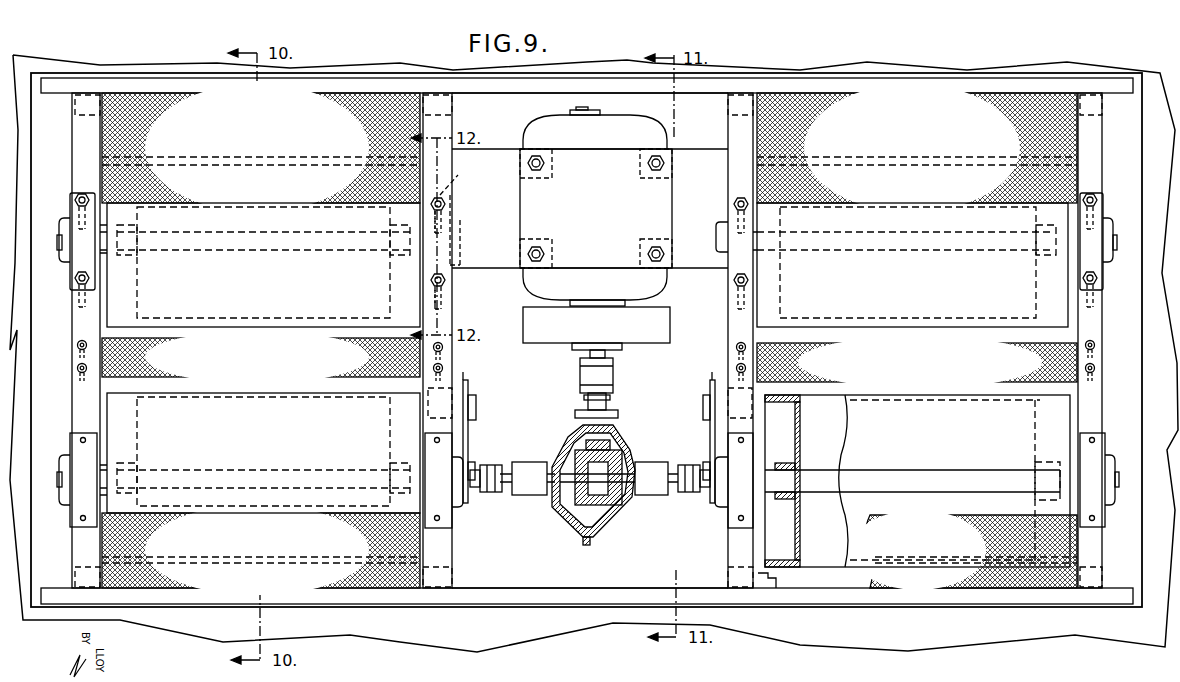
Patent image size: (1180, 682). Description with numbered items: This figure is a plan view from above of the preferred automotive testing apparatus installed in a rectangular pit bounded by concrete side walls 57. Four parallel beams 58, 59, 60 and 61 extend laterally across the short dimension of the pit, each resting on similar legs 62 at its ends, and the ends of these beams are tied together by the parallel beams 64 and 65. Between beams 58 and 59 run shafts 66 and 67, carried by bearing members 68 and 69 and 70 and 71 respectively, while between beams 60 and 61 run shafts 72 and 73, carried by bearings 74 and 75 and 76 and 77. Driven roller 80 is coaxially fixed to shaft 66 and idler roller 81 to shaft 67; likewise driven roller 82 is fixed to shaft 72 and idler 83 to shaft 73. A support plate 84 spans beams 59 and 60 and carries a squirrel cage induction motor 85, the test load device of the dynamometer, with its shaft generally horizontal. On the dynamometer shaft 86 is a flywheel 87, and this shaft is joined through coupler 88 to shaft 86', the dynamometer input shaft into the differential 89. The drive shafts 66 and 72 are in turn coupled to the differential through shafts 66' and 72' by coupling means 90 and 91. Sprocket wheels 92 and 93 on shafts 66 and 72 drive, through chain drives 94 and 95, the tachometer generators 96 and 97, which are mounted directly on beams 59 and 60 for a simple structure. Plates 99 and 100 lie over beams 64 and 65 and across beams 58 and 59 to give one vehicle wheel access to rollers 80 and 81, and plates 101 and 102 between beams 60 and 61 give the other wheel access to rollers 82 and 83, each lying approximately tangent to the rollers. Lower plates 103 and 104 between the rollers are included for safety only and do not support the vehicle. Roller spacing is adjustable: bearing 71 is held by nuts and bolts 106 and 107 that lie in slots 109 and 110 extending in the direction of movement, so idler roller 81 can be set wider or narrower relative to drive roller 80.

The concrete side walls 57 is at (877, 80).
The beam 58 is at (78, 145).
The beam 59 is at (444, 124).
The beam 60 is at (733, 141).
The beam 61 is at (1098, 149).
The legs 62 is at (72, 113).
The beam 64 is at (537, 595).
The beam 65 is at (588, 86).
The shaft 66 is at (260, 453).
The shaft 66' is at (527, 459).
The shaft 67 is at (286, 252).
The bearing member 68 is at (68, 455).
The bearing member 69 is at (462, 506).
The bearing member 70 is at (68, 215).
The bearing member 71 is at (462, 224).
The shaft 72 is at (917, 481).
The shaft 72' is at (659, 459).
The shaft 73 is at (876, 254).
The bearing 74 is at (722, 504).
The bearing 75 is at (1112, 462).
The bearing 76 is at (718, 226).
The bearing 77 is at (1110, 232).
The driven roller 80 is at (118, 422).
The idler roller 81 is at (115, 275).
The driven roller 82 is at (860, 550).
The idler roller 83 is at (770, 312).
The support plate 84 is at (498, 156).
The squirrel cage induction motor 85 is at (536, 284).
The dynamometer shaft 86 is at (582, 353).
The shaft 86' is at (579, 400).
The flywheel 87 is at (608, 332).
The coupler 88 is at (613, 372).
The differential 89 is at (558, 504).
The coupling means 90 is at (497, 493).
The coupling means 91 is at (682, 495).
The sprocket wheel 92 is at (468, 467).
The sprocket wheel 93 is at (714, 466).
The chain drive 94 is at (470, 430).
The chain drive 95 is at (710, 426).
The tachometer generator 96 is at (458, 385).
The tachometer generator 97 is at (722, 385).
The plate 99 is at (268, 540).
The plate 100 is at (329, 103).
The plate 101 is at (958, 548).
The plate 102 is at (950, 136).
The lower plate 103 is at (270, 365).
The lower plate 104 is at (943, 370).
The nut and bolt 106 is at (450, 284).
The nut and bolt 107 is at (446, 196).
The slot 109 is at (458, 298).
The slot 110 is at (439, 236).